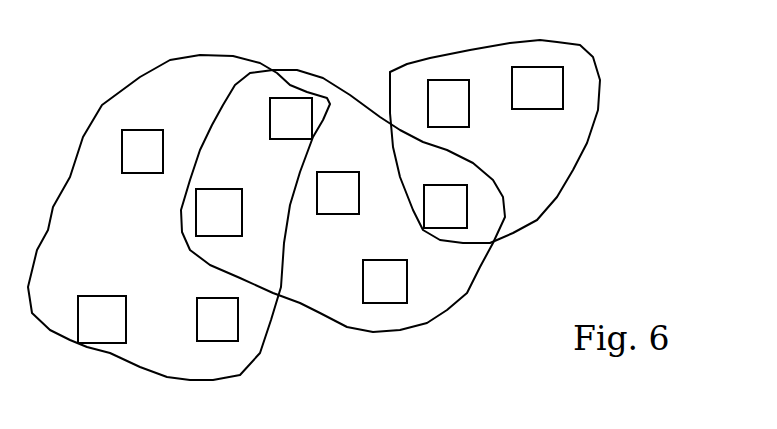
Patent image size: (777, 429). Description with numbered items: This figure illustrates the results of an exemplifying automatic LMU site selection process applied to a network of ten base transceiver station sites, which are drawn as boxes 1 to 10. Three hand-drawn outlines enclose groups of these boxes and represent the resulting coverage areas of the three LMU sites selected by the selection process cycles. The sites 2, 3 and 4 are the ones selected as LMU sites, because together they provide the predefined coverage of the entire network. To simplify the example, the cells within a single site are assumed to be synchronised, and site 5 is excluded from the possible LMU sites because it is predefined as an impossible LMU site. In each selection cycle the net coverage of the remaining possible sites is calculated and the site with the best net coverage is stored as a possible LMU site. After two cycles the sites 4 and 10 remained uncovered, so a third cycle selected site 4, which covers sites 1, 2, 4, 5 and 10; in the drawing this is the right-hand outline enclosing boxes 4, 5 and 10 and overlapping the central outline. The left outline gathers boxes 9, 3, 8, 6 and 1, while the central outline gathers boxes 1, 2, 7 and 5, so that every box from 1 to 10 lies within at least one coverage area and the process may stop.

The BTS site 1 is at (291, 118).
The BTS site 2 is at (338, 193).
The BTS site 3 is at (219, 212).
The BTS site 4 is at (448, 103).
The BTS site 5 is at (445, 206).
The BTS site 6 is at (217, 319).
The BTS site 7 is at (385, 281).
The BTS site 8 is at (102, 319).
The BTS site 9 is at (142, 151).
The BTS site 10 is at (537, 88).